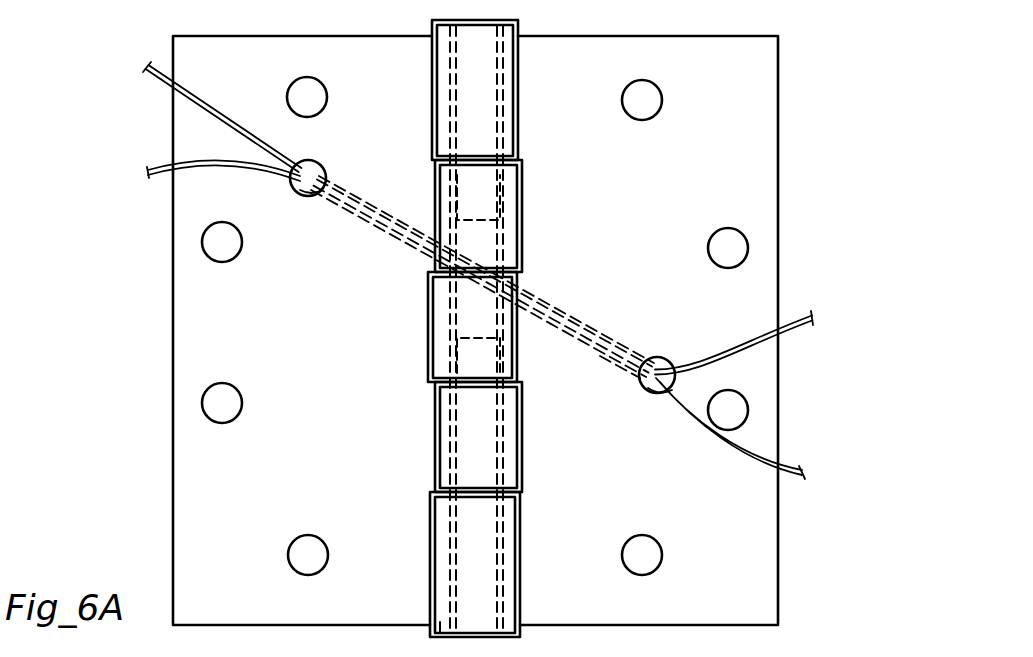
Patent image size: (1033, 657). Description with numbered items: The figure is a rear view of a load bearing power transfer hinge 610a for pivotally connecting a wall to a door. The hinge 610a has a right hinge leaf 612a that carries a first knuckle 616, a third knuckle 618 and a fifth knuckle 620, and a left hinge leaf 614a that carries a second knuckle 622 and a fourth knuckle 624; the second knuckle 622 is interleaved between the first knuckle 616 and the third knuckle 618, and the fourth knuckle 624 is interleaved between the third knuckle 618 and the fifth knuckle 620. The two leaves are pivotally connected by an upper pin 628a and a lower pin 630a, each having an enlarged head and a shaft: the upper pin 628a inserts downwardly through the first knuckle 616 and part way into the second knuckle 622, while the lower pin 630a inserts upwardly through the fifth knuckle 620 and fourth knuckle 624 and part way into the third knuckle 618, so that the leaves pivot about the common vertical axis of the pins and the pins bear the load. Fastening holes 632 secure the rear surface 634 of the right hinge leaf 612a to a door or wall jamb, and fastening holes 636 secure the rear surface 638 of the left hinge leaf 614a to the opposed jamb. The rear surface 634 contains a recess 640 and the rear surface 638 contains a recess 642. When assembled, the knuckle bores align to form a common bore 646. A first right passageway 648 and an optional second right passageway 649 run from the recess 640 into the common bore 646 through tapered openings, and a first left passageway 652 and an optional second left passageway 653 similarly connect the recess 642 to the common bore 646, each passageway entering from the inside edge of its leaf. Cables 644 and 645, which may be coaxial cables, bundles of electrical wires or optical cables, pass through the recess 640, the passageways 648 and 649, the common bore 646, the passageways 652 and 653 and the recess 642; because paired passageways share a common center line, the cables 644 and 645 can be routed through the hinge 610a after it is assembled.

The load bearing power transfer hinge 610a is at (818, 178).
The right hinge leaf 612a is at (778, 36).
The left hinge leaf 614a is at (176, 36).
The first knuckle 616 is at (518, 73).
The third knuckle 618 is at (518, 368).
The fifth knuckle 620 is at (520, 545).
The second knuckle 622 is at (435, 207).
The fourth knuckle 624 is at (435, 466).
The upper pin 628a is at (441, 72).
The lower pin 630a is at (439, 628).
The fastening holes 632 is at (661, 96).
The rear surface 634 is at (664, 193).
The fastening holes 636 is at (290, 92).
The rear surface 638 is at (352, 393).
The recess 640 is at (687, 373).
The recess 642 is at (265, 166).
The cable 644 is at (292, 166).
The cable 645 is at (306, 200).
The common bore 646 is at (518, 262).
The first right passageway 648 is at (540, 310).
The second right passageway 649 is at (612, 365).
The first left passageway 652 is at (336, 200).
The second left passageway 653 is at (370, 217).